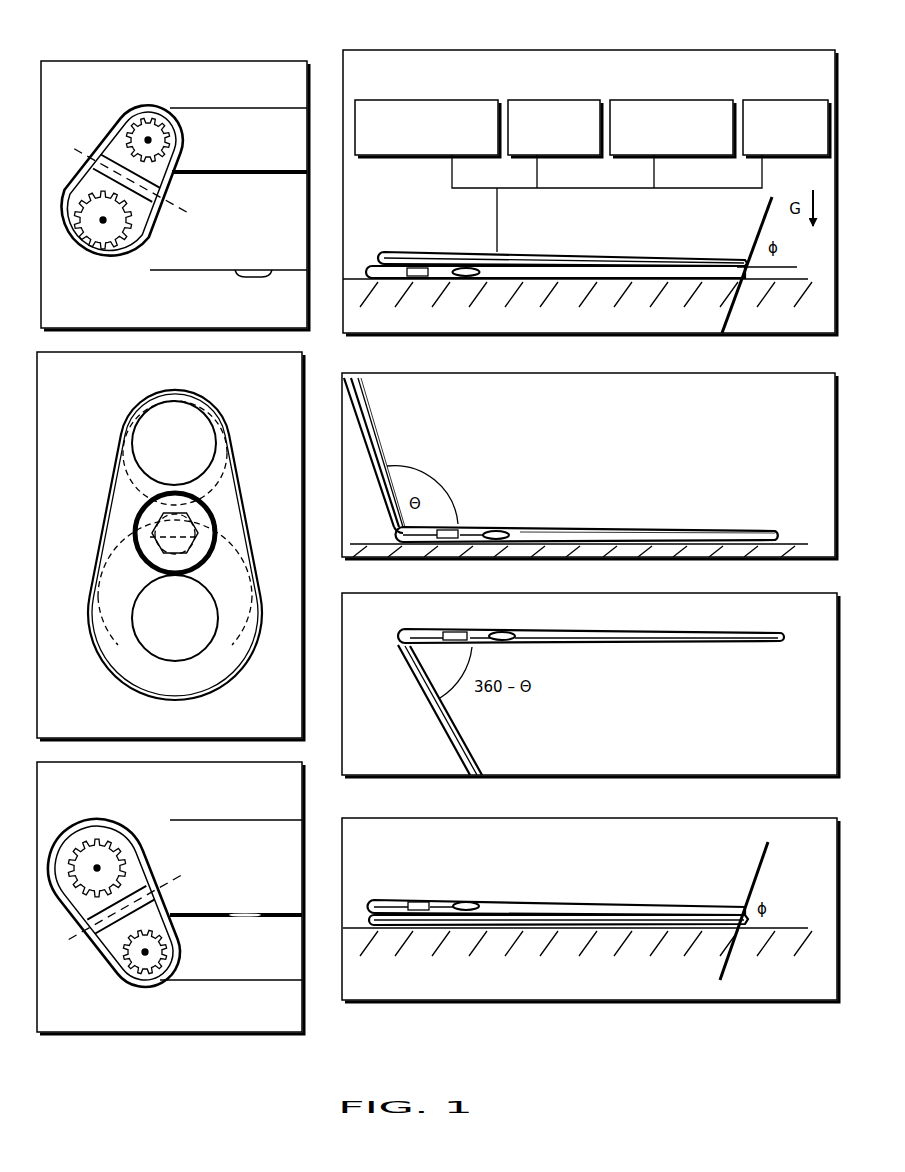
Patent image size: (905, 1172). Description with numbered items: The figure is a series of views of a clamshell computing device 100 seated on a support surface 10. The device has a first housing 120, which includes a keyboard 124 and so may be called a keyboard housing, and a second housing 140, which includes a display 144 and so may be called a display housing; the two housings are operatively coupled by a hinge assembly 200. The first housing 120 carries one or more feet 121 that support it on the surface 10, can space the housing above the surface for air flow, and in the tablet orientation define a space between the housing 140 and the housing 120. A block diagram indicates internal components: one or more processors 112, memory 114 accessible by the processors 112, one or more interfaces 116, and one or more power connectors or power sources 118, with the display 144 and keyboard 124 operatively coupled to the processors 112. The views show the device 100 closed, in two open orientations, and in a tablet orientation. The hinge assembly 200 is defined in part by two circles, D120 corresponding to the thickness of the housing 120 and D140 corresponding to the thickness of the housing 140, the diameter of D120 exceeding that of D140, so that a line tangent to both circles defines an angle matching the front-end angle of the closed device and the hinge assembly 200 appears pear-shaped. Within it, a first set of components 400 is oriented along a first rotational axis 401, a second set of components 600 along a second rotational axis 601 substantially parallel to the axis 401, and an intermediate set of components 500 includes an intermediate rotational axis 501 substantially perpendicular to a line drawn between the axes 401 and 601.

The computing device 100 is at (410, 80).
The surface 10 is at (436, 315).
The processors 112 is at (412, 150).
The memory 114 is at (540, 150).
The interfaces 116 is at (658, 150).
The power connectors and/or power sources 118 is at (771, 150).
The first housing 120 is at (245, 228).
The foot 121 is at (252, 280).
The keyboard 124 is at (659, 527).
The second housing 140 is at (245, 152).
The display 144 is at (360, 414).
The hinge assembly 200 is at (124, 104).
The first set of components 400 is at (148, 106).
The first rotational axis 401 is at (148, 140).
The intermediate set of components 500 is at (170, 186).
The intermediate rotational axis 501 is at (173, 210).
The second set of components 600 is at (85, 266).
The second rotational axis 601 is at (103, 220).
The circle D140 is at (208, 398).
The circle D120 is at (130, 692).